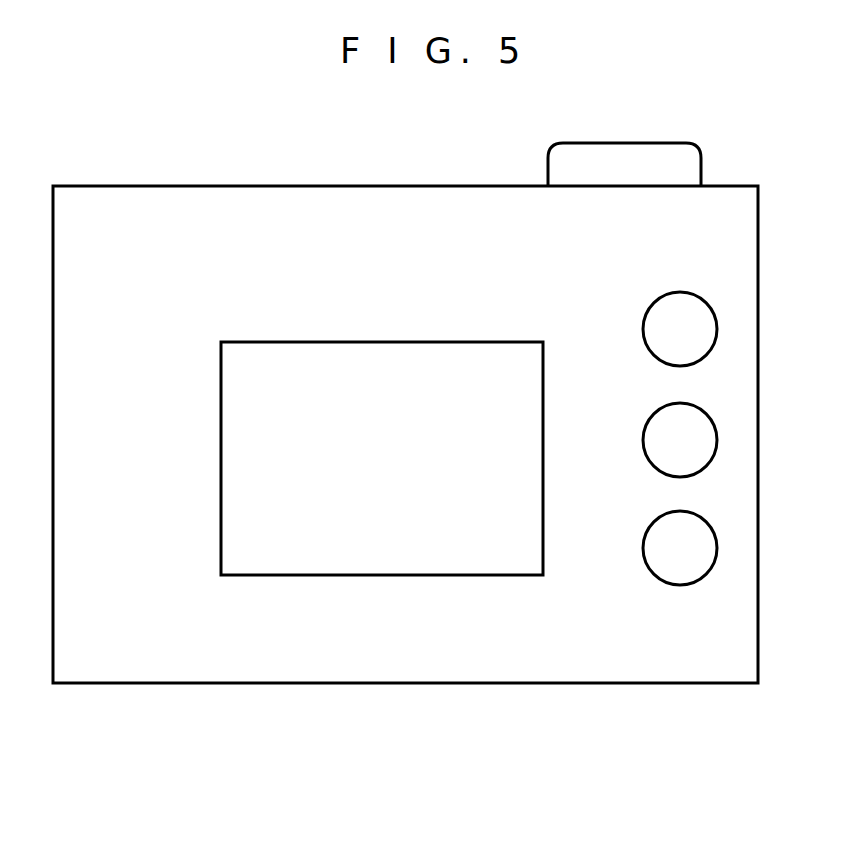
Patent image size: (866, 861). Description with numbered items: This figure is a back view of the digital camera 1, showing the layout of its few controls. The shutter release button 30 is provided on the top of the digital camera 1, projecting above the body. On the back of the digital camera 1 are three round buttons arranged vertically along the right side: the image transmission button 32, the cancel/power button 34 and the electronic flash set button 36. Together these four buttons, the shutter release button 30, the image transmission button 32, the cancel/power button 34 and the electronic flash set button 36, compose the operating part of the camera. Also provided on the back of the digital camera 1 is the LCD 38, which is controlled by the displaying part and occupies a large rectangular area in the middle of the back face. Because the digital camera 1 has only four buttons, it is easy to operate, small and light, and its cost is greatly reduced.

The digital camera 1 is at (305, 763).
The shutter release button 30 is at (633, 142).
The image transmission button 32 is at (730, 330).
The cancel/power button 34 is at (727, 442).
The electronic flash set button 36 is at (727, 550).
The LCD 38 is at (312, 342).